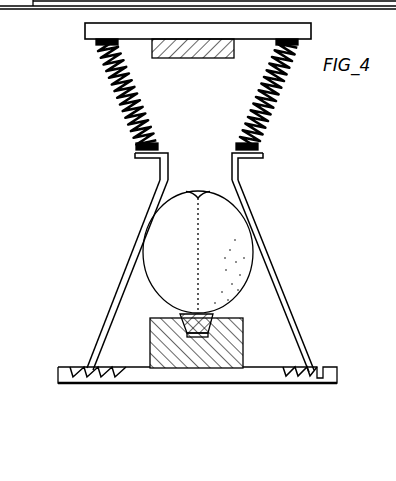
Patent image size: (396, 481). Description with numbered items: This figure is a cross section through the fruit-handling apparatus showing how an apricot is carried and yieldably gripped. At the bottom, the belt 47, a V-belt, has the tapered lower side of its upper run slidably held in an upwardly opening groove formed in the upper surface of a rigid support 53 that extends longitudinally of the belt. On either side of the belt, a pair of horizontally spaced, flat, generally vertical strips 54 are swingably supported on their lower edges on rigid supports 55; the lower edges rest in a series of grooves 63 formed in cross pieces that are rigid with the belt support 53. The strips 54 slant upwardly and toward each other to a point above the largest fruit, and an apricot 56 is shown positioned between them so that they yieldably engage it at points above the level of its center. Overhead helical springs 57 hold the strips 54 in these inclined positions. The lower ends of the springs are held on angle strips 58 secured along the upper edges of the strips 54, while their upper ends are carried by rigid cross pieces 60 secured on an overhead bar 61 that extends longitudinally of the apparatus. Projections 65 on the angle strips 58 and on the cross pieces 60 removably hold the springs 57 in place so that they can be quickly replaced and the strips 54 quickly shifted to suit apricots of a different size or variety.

The belt 47 is at (184, 318).
The rigid support 53 is at (244, 340).
The strips 54 is at (135, 260).
The rigid supports 55 is at (340, 370).
The apricot 56 is at (198, 252).
The helical springs 57 is at (240, 117).
The angle strips 58 is at (153, 159).
The cross pieces 60 is at (85, 28).
The overhead bar 61 is at (200, 61).
The grooves 63 is at (100, 365).
The projections 65 is at (97, 43).